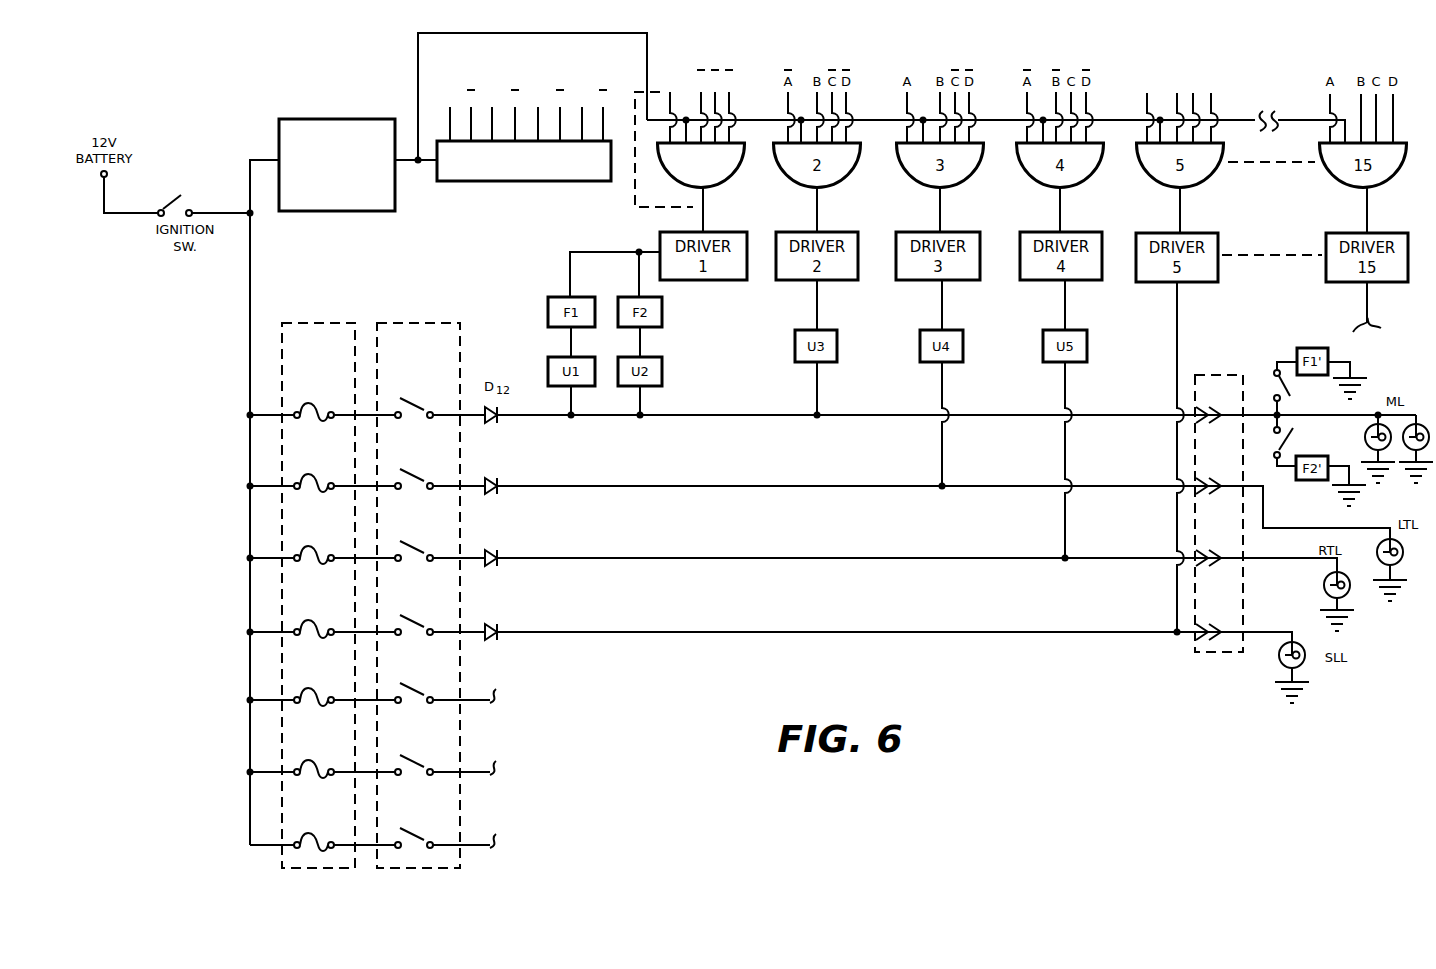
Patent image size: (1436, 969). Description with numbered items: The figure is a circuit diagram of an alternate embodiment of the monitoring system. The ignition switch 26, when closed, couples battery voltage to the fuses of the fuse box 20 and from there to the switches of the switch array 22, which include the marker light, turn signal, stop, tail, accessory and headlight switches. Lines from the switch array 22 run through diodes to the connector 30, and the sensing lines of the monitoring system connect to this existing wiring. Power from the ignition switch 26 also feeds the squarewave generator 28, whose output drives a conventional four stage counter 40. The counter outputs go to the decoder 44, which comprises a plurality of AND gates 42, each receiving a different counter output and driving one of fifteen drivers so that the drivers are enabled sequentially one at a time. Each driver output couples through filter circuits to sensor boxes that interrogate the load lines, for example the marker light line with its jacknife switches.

The fuse box 20 is at (305, 395).
The switch array 22 is at (406, 398).
The ignition switch 26 is at (176, 198).
The squarewave generator 28 is at (325, 202).
The connector 30 is at (1206, 402).
The four stage counter 40 is at (503, 181).
The AND gate 42 is at (746, 177).
The decoder 44 is at (634, 193).